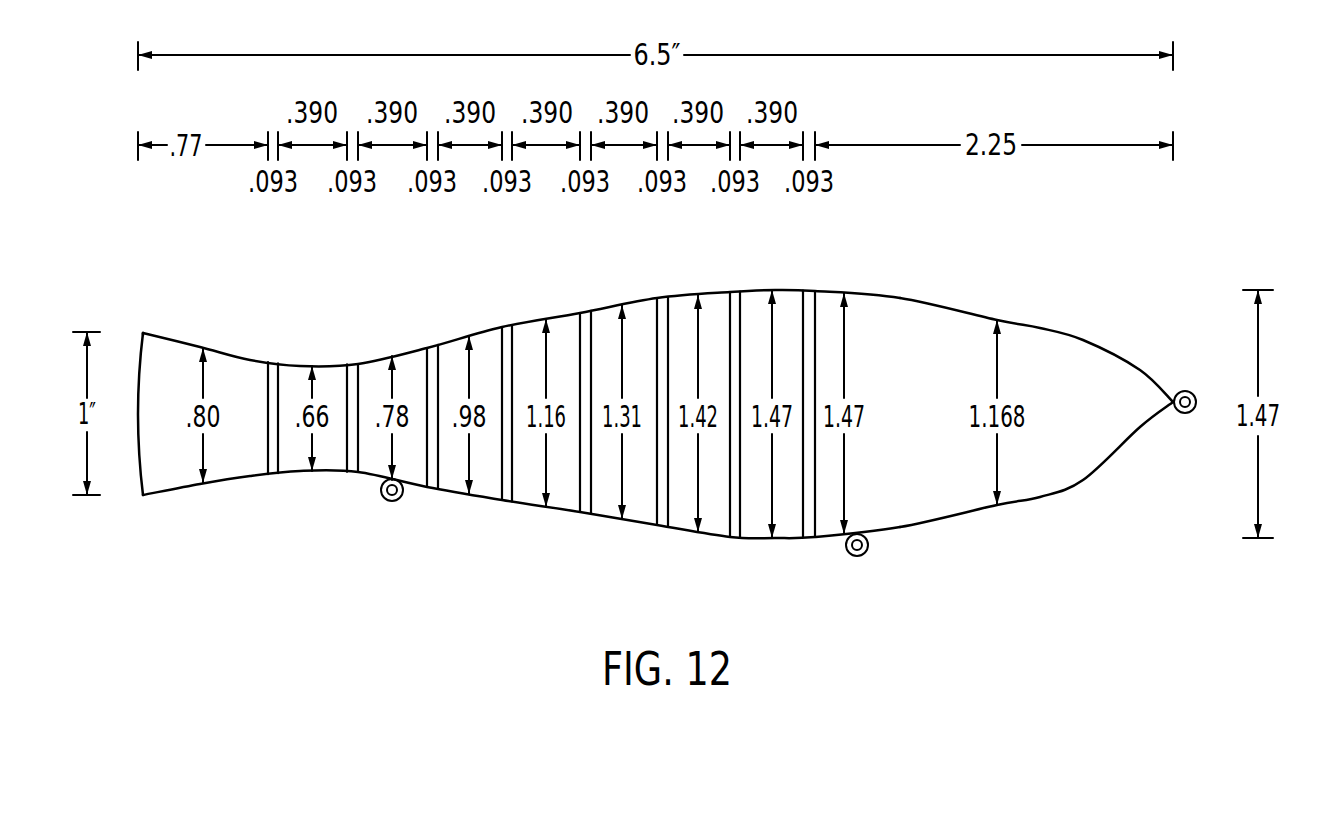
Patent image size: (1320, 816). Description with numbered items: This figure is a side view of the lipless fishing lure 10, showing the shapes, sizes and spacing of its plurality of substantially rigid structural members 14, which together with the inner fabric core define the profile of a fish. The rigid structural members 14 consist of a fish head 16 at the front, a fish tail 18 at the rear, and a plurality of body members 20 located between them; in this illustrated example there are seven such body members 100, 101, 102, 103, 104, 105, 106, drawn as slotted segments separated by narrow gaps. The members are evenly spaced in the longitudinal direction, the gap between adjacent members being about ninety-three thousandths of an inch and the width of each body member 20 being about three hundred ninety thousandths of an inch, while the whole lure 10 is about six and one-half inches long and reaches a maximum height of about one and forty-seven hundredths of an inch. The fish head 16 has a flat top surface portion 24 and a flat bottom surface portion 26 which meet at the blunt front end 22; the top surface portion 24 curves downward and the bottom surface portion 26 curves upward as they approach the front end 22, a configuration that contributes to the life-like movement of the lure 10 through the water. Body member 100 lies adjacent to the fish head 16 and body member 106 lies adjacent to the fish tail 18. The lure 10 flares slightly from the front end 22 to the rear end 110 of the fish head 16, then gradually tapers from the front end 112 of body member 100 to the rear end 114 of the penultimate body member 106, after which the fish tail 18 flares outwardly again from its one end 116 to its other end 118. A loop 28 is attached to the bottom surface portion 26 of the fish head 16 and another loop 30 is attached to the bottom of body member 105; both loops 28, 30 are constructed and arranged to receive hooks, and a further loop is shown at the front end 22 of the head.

The fishing lure 10 is at (1220, 191).
The rigid structural members 14 is at (157, 350).
The fish head 16 is at (1090, 445).
The fish tail 18 is at (177, 478).
The body members 20 is at (373, 458).
The front end 22 is at (1172, 410).
The top surface portion 24 is at (1082, 340).
The bottom surface portion 26 is at (972, 518).
The loop 28 is at (869, 552).
The loop 30 is at (394, 502).
The body member 100 is at (792, 518).
The body member 101 is at (717, 515).
The body member 102 is at (637, 512).
The body member 103 is at (560, 498).
The body member 104 is at (485, 480).
The body member 105 is at (408, 357).
The body member 106 is at (332, 372).
The rear end 110 is at (828, 536).
The front end 112 is at (809, 306).
The rear end 114 is at (280, 462).
The one end 116 is at (272, 366).
The other end 118 is at (136, 450).